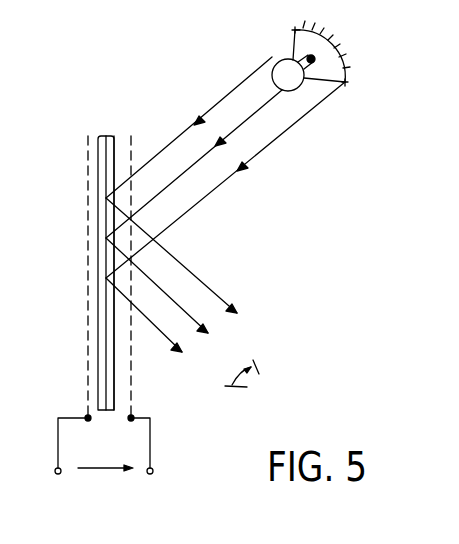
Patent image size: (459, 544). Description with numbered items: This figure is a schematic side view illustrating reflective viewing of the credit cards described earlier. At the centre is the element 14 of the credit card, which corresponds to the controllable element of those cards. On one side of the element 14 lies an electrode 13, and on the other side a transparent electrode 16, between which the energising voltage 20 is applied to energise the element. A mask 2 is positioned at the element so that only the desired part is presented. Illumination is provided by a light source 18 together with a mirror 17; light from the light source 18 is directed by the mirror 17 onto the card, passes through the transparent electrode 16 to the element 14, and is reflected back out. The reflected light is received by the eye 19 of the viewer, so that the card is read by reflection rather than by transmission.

The mask 2 is at (116, 134).
The electrode 13 is at (88, 136).
The element of the credit card 14 is at (102, 135).
The transparent electrode 16 is at (131, 151).
The mirror 17 is at (311, 34).
The light source 18 is at (283, 72).
The eye of the viewer 19 is at (232, 386).
The energising voltage 20 is at (100, 460).